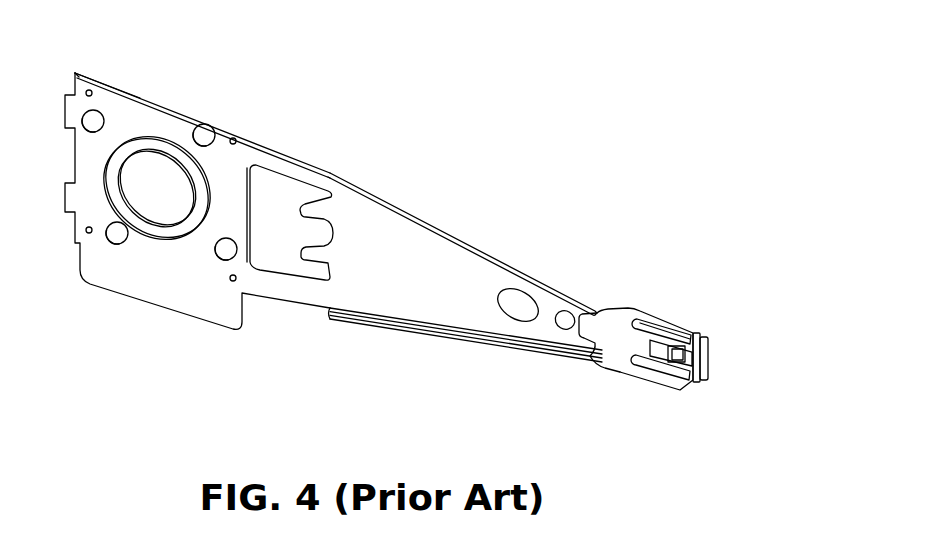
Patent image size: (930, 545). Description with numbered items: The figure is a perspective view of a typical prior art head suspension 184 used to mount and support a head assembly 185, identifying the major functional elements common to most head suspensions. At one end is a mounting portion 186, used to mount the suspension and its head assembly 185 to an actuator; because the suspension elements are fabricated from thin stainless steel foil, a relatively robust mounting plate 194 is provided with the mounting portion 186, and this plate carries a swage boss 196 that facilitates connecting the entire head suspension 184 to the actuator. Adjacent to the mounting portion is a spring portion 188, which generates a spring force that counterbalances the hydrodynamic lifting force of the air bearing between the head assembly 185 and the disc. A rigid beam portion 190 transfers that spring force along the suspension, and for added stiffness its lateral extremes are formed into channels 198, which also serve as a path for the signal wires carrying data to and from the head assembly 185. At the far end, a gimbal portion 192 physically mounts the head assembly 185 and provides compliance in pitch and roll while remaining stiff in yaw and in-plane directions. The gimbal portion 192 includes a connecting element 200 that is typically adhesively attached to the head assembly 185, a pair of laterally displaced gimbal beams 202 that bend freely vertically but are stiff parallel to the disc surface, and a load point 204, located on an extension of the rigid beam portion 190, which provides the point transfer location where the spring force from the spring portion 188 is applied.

The head suspension 184 is at (441, 145).
The head assembly 185 is at (710, 355).
The mounting portion 186 is at (162, 257).
The spring portion 188 is at (330, 160).
The rigid beam portion 190 is at (430, 256).
The gimbal portion 192 is at (617, 343).
The mounting plate 194 is at (87, 77).
The swage boss 196 is at (153, 140).
The channels 198 is at (516, 263).
The connecting element 200 is at (694, 372).
The gimbal beams 202 is at (657, 318).
The load point 204 is at (678, 348).